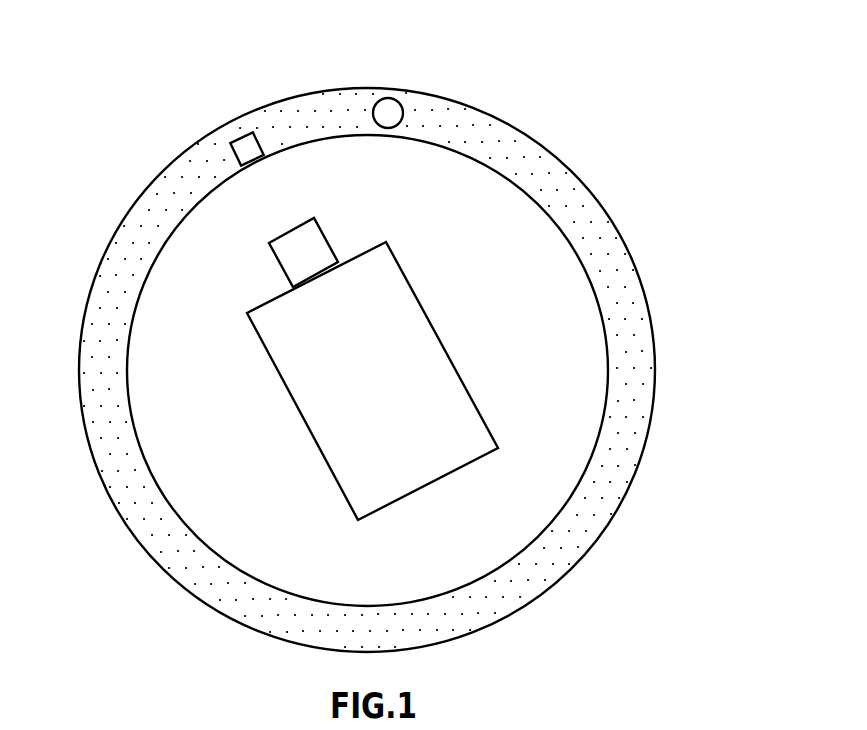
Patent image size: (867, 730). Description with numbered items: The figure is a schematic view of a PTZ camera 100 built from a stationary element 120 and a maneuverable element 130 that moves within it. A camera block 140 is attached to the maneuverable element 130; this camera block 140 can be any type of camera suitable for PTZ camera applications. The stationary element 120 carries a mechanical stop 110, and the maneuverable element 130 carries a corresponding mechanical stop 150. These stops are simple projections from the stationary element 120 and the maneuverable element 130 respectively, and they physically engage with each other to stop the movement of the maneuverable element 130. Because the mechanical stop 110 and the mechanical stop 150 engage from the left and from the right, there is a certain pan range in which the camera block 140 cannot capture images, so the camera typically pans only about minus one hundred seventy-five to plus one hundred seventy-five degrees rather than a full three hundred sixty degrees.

The PTZ camera 100 is at (400, 339).
The mechanical stop 110 is at (409, 95).
The stationary element 120 is at (607, 240).
The maneuverable element 130 is at (510, 518).
The camera block 140 is at (314, 470).
The mechanical stop 150 is at (243, 136).